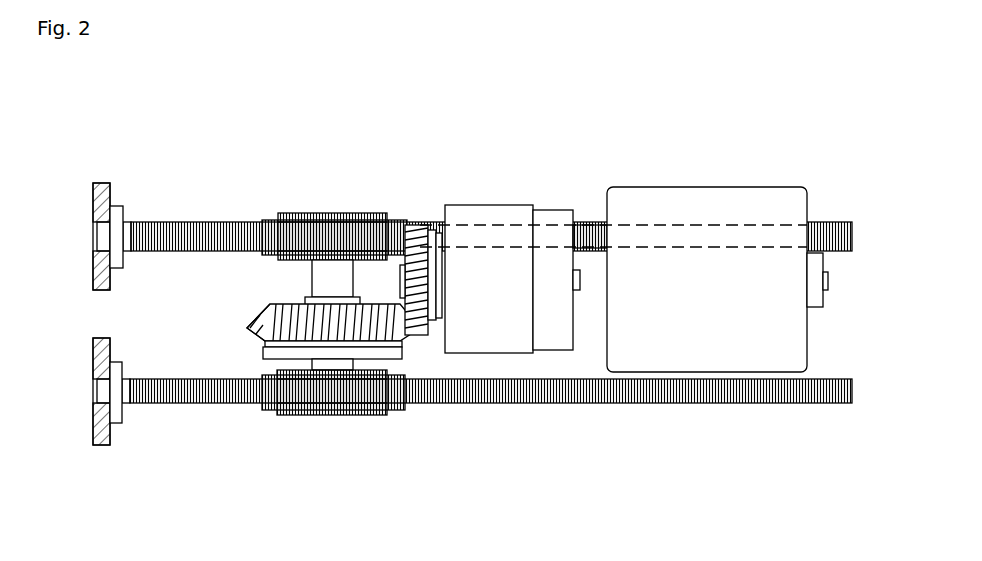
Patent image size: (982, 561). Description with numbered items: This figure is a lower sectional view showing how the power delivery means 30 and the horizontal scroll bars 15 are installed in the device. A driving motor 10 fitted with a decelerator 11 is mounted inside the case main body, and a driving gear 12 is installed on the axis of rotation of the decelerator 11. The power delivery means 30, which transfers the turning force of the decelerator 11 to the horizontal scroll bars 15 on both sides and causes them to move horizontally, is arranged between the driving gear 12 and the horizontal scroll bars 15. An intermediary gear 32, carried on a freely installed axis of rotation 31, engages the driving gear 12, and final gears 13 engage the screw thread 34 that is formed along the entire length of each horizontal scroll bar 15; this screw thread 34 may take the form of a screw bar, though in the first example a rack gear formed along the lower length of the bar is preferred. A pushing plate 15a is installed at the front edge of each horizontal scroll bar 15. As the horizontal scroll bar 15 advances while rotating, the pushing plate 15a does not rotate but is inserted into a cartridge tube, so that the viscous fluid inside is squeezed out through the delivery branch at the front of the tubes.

The driving motor 10 is at (715, 210).
The decelerator 11 is at (492, 272).
The driving gear 12 is at (430, 222).
The final gear 13 is at (370, 412).
The horizontal scroll bar 15 is at (840, 392).
The pushing plate 15a is at (100, 181).
The power delivery means 30 is at (420, 355).
The axis of rotation 31 is at (323, 284).
The intermediary gear 32 is at (250, 345).
The screw thread 34 is at (176, 222).